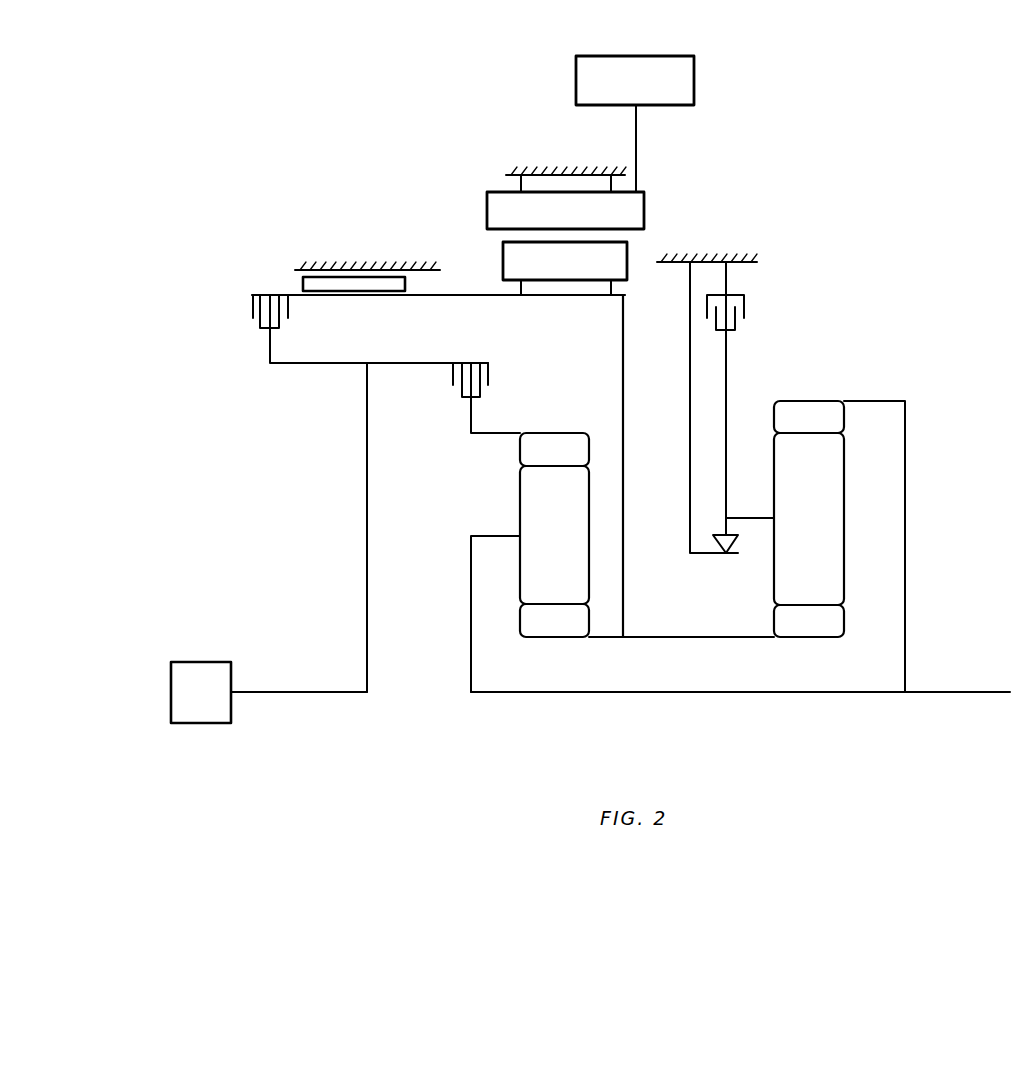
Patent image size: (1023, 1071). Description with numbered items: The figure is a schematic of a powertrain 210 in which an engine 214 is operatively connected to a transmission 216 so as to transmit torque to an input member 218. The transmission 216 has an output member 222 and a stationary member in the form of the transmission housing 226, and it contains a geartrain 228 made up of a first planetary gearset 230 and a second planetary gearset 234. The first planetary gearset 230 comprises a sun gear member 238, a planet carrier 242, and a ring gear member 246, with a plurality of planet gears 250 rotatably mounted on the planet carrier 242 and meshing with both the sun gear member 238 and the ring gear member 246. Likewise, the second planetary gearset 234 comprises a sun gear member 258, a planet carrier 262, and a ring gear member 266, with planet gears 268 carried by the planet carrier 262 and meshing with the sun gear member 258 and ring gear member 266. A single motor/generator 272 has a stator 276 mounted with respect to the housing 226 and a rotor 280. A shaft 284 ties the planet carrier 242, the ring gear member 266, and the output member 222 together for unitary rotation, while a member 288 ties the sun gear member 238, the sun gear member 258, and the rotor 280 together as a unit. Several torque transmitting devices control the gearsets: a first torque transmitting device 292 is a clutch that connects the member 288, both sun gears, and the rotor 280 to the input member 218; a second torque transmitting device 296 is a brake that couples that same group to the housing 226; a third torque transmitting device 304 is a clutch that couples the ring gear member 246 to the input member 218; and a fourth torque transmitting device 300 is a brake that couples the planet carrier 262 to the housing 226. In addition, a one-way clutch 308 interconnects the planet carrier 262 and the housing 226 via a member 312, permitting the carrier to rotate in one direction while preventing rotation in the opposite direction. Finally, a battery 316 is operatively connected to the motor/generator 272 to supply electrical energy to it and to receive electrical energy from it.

The powertrain 210 is at (220, 195).
The engine 214 is at (201, 692).
The transmission 216 is at (792, 163).
The input member 218 is at (321, 690).
The output member 222 is at (942, 690).
The transmission housing 226 is at (420, 273).
The geartrain 228 is at (815, 311).
The first planetary gearset 230 is at (452, 500).
The second planetary gearset 234 is at (807, 365).
The sun gear member 238 is at (558, 626).
The planet carrier 242 is at (471, 656).
The ring gear member 246 is at (558, 447).
The planet gears 250 is at (518, 522).
The sun gear member 258 is at (812, 626).
The planet carrier 262 is at (760, 518).
The ring gear member 266 is at (810, 415).
The planet gears 268 is at (845, 525).
The motor/generator 272 is at (472, 228).
The stator 276 is at (644, 211).
The rotor 280 is at (627, 262).
The shaft 284 is at (717, 694).
The member 288 is at (695, 640).
The first torque transmitting device 292 is at (242, 320).
The second torque transmitting device 296 is at (280, 278).
The fourth torque transmitting device 300 is at (762, 311).
The third torque transmitting device 304 is at (500, 353).
The one-way clutch 308 is at (750, 548).
The member 312 is at (690, 408).
The battery 316 is at (635, 124).